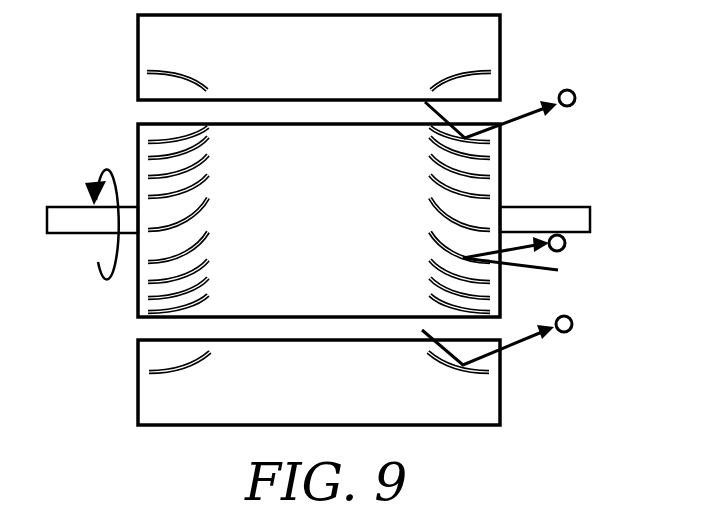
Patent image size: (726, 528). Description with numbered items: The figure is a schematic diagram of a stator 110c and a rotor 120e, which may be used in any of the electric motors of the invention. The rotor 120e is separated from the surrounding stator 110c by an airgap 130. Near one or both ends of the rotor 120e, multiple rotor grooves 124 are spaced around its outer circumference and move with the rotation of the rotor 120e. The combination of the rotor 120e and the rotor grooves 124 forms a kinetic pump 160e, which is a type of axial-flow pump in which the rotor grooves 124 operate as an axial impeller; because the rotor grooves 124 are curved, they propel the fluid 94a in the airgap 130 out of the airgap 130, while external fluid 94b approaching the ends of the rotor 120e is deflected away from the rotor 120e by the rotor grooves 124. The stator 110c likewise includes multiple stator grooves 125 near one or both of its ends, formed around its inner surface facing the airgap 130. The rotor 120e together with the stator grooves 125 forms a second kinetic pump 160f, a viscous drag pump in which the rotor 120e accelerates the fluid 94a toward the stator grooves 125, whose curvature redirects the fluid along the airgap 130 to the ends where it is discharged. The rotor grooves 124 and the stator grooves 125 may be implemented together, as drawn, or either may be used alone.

The stator 110c is at (138, 62).
The airgap 130 is at (136, 110).
The rotor 120e is at (346, 232).
The rotor grooves 124 is at (319, 219).
The kinetic pump 160e is at (207, 300).
The stator grooves 125 is at (319, 372).
The kinetic pump 160f is at (209, 354).
The fluid 94a is at (575, 97).
The external fluid 94b is at (565, 245).